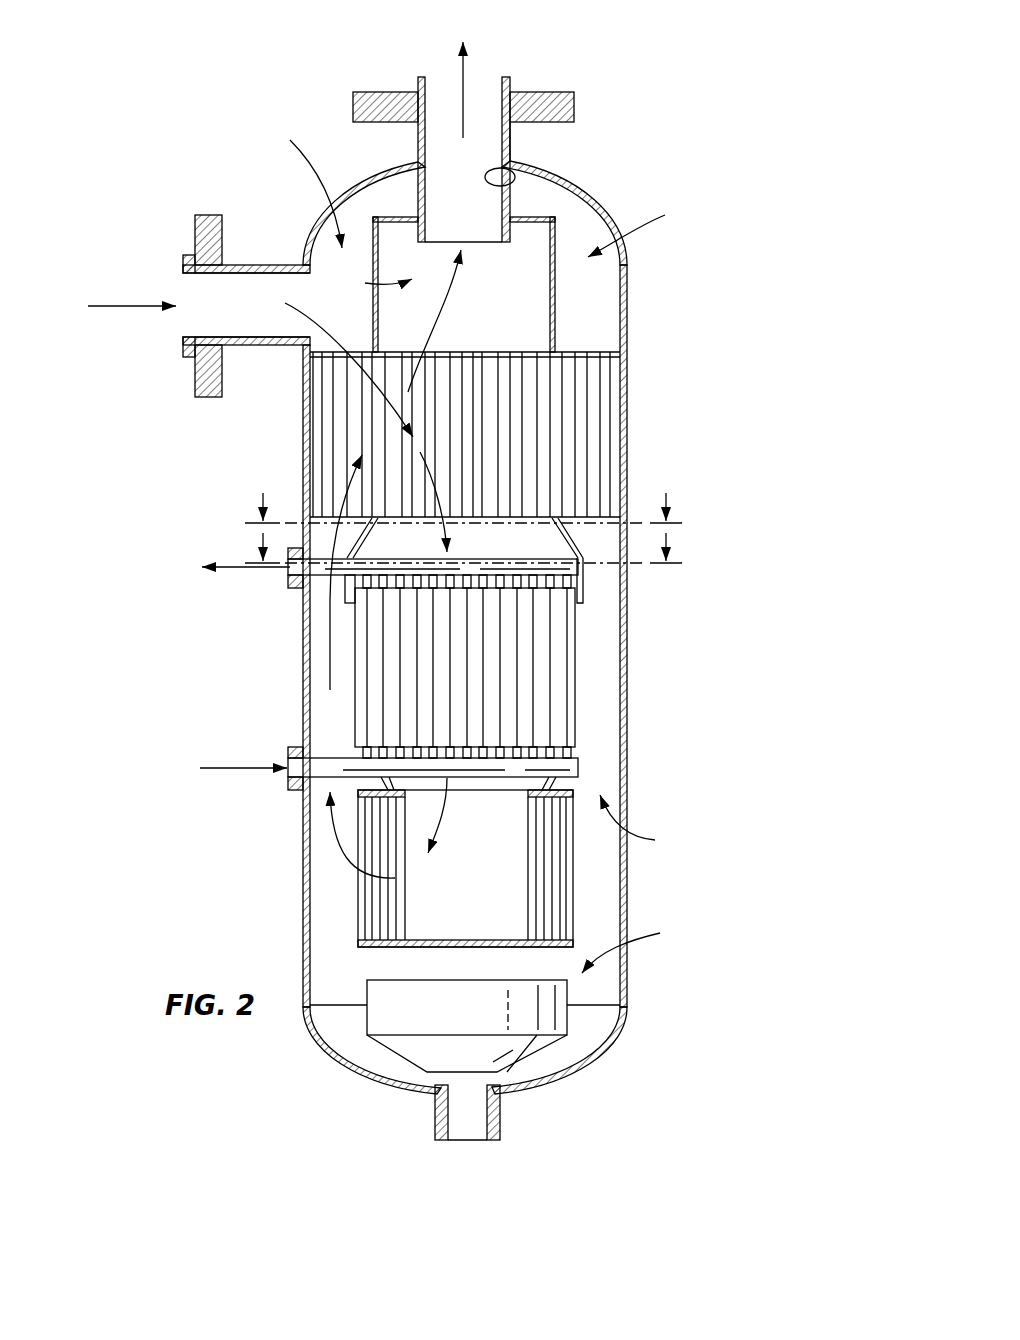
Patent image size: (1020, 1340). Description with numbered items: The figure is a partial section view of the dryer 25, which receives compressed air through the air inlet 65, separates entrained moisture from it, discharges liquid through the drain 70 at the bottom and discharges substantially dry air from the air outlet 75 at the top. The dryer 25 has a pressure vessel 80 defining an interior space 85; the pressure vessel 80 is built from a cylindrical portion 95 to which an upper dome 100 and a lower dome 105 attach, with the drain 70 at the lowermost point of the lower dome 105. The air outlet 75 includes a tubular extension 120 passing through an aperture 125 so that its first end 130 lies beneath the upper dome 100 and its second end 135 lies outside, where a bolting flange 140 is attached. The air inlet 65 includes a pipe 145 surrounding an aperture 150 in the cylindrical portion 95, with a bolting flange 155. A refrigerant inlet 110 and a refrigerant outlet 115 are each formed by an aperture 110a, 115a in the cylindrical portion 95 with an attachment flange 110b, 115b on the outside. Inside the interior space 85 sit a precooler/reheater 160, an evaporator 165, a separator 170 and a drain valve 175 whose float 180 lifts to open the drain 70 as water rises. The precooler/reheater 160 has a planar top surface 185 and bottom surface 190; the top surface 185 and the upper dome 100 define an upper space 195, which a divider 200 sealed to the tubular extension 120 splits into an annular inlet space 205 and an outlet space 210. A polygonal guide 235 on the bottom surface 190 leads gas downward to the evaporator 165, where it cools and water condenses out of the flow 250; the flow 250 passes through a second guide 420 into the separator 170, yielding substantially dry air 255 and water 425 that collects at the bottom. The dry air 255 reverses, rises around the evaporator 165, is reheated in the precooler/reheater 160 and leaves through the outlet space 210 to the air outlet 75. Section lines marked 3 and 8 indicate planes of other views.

The dryer 25 is at (667, 73).
The air inlet 65 is at (160, 344).
The drain 70 is at (478, 1132).
The air outlet 75 is at (548, 57).
The pressure vessel 80 is at (627, 876).
The interior space 85 is at (641, 823).
The cylindrical portion 95 is at (627, 687).
The upper dome 100 is at (310, 222).
The lower dome 105 is at (345, 1060).
The refrigerant inlet 110 is at (277, 780).
The aperture 110a is at (288, 763).
The attachment flange 110b is at (297, 790).
The refrigerant outlet 115 is at (277, 598).
The aperture 115a is at (290, 572).
The attachment flange 115b is at (298, 590).
The tubular extension 120 is at (512, 139).
The aperture 125 is at (517, 180).
The first end 130 is at (490, 243).
The second end 135 is at (486, 92).
The bolting flange 140 is at (370, 92).
The pipe 145 is at (245, 346).
The aperture 150 is at (293, 276).
The bolting flange 155 is at (195, 230).
The precooler/reheater 160 is at (605, 352).
The evaporator 165 is at (555, 633).
The separator 170 is at (383, 905).
The drain valve 175 is at (638, 946).
The float 180 is at (550, 1020).
The top surface 185 is at (573, 352).
The bottom surface 190 is at (592, 535).
The upper space 195 is at (641, 227).
The divider 200 is at (388, 217).
The annular inlet space 205 is at (297, 184).
The outlet space 210 is at (369, 284).
The polygonal guide 235 is at (366, 543).
The flow 250 is at (312, 357).
The substantially dry air 255 is at (449, 318).
The second guide 420 is at (592, 778).
The water 425 is at (600, 1005).
The section line 3 is at (464, 548).
The section line 8 is at (464, 507).